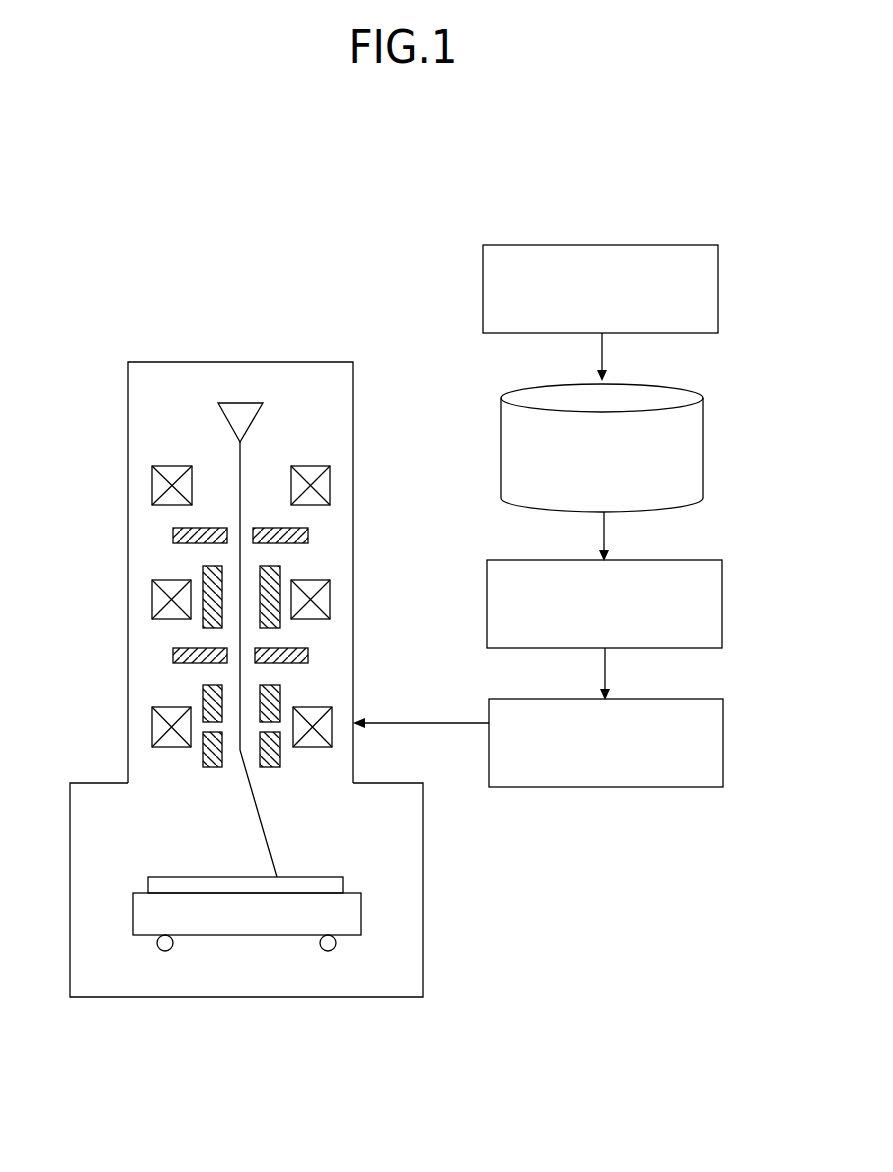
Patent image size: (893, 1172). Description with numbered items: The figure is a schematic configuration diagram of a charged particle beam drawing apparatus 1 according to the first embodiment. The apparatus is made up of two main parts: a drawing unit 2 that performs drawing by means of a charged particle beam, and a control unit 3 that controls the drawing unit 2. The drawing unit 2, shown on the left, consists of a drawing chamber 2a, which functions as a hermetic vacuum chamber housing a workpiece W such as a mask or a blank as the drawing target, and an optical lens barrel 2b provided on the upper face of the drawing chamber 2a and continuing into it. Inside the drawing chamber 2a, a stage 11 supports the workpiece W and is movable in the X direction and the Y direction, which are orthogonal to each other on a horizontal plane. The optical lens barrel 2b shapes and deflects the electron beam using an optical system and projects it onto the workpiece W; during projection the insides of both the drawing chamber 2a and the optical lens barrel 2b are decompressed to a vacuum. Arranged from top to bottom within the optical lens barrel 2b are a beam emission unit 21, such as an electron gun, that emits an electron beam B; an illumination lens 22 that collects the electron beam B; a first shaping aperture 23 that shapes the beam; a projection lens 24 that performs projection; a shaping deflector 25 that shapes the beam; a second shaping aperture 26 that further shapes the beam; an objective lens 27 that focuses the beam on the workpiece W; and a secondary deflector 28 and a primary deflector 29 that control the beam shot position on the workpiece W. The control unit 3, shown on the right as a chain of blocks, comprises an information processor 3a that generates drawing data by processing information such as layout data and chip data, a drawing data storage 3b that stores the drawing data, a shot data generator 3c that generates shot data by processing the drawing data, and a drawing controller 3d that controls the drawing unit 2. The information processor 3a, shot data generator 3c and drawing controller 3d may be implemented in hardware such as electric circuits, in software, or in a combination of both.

The charged particle beam drawing apparatus 1 is at (683, 210).
The drawing unit 2 is at (105, 391).
The drawing chamber 2a is at (70, 820).
The optical lens barrel 2b is at (128, 500).
The control unit 3 is at (760, 368).
The information processor 3a is at (718, 287).
The drawing data storage 3b is at (703, 452).
The shot data generator 3c is at (722, 603).
The drawing controller 3d is at (723, 740).
The stage 11 is at (358, 900).
The beam emission unit 21 is at (248, 407).
The illumination lens 22 is at (310, 467).
The first shaping aperture 23 is at (267, 530).
The projection lens 24 is at (308, 582).
The shaping deflector 25 is at (203, 573).
The second shaping aperture 26 is at (307, 658).
The objective lens 27 is at (313, 712).
The secondary deflector 28 is at (203, 693).
The primary deflector 29 is at (202, 763).
The electron beam B is at (240, 467).
The workpiece W is at (300, 880).